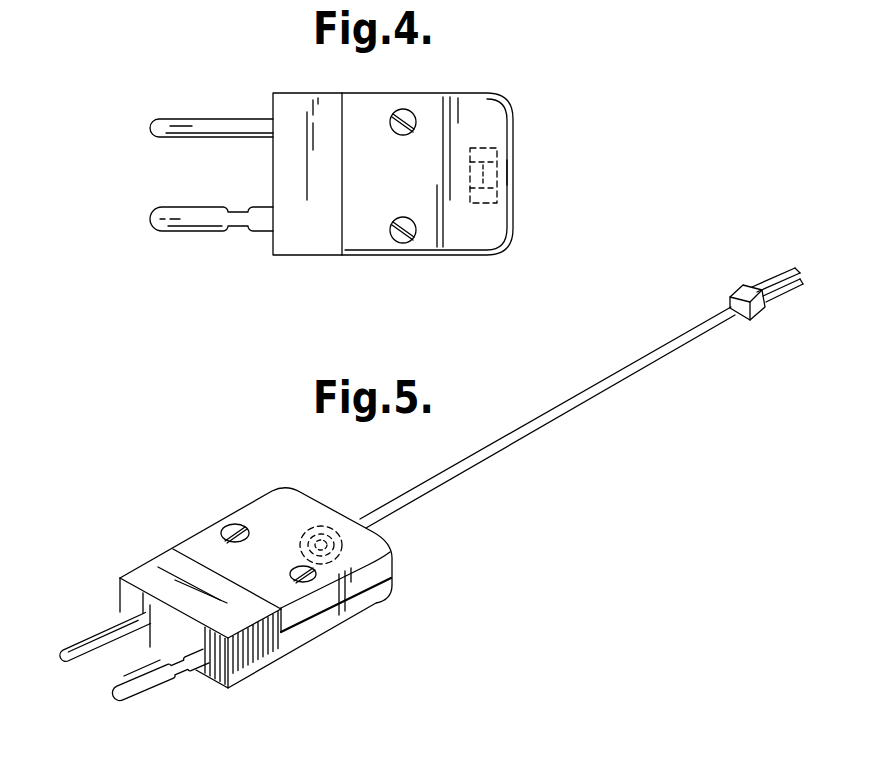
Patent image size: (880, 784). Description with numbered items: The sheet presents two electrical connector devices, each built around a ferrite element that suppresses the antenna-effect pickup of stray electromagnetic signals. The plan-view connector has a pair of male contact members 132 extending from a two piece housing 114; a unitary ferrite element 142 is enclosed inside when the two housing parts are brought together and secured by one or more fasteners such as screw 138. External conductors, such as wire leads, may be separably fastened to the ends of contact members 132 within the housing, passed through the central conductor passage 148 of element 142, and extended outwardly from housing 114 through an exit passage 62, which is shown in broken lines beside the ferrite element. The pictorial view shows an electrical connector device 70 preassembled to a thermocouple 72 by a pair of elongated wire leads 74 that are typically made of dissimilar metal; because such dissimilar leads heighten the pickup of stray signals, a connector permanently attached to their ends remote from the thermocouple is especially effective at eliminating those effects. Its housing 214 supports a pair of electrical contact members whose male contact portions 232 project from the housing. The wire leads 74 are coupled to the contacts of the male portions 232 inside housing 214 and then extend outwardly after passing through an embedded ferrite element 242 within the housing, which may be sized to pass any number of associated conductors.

In FIG. 4, the two piece housing 114 is at (371, 118).
In FIG. 4, the male contact members 132 is at (205, 215).
In FIG. 4, the screw 138 is at (410, 134).
In FIG. 4, the unitary ferrite element 142 is at (483, 147).
In FIG. 4, the exit passage 62 is at (502, 184).
In FIG. 4, the central conductor passage 148 is at (523, 172).
In FIG. 5, the electrical connector device 70 is at (303, 629).
In FIG. 5, the housing 214 is at (259, 521).
In FIG. 5, the embedded ferrite element 242 is at (345, 538).
In FIG. 5, the male contact portions 232 is at (118, 692).
In FIG. 5, the wire leads 74 is at (524, 424).
In FIG. 5, the thermocouple 72 is at (748, 285).